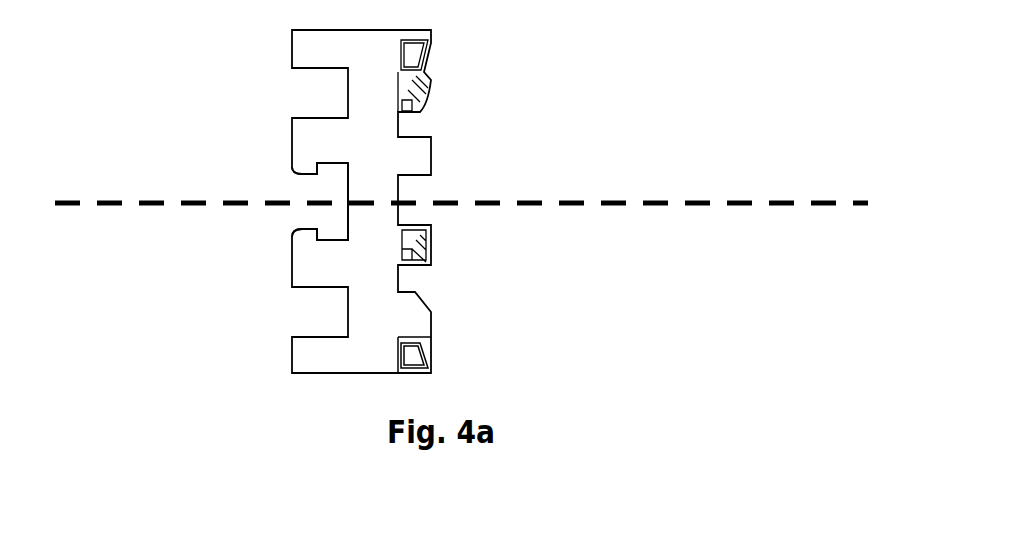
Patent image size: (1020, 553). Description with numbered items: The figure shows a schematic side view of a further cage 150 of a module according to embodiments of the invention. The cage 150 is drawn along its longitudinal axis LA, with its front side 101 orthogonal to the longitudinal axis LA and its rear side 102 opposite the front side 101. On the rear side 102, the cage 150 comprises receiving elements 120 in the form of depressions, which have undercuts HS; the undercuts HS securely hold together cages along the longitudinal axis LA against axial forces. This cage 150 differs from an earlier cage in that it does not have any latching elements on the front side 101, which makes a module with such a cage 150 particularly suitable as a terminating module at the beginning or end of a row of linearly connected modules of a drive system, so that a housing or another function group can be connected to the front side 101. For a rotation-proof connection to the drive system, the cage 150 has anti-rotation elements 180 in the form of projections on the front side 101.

The longitudinal axis LA is at (461, 131).
The rear side 102 is at (267, 201).
The receiving elements 120 is at (306, 190).
The undercut HS is at (330, 230).
The front side 101 is at (483, 95).
The anti-rotation elements 180 is at (521, 237).
The cage 150 is at (503, 347).